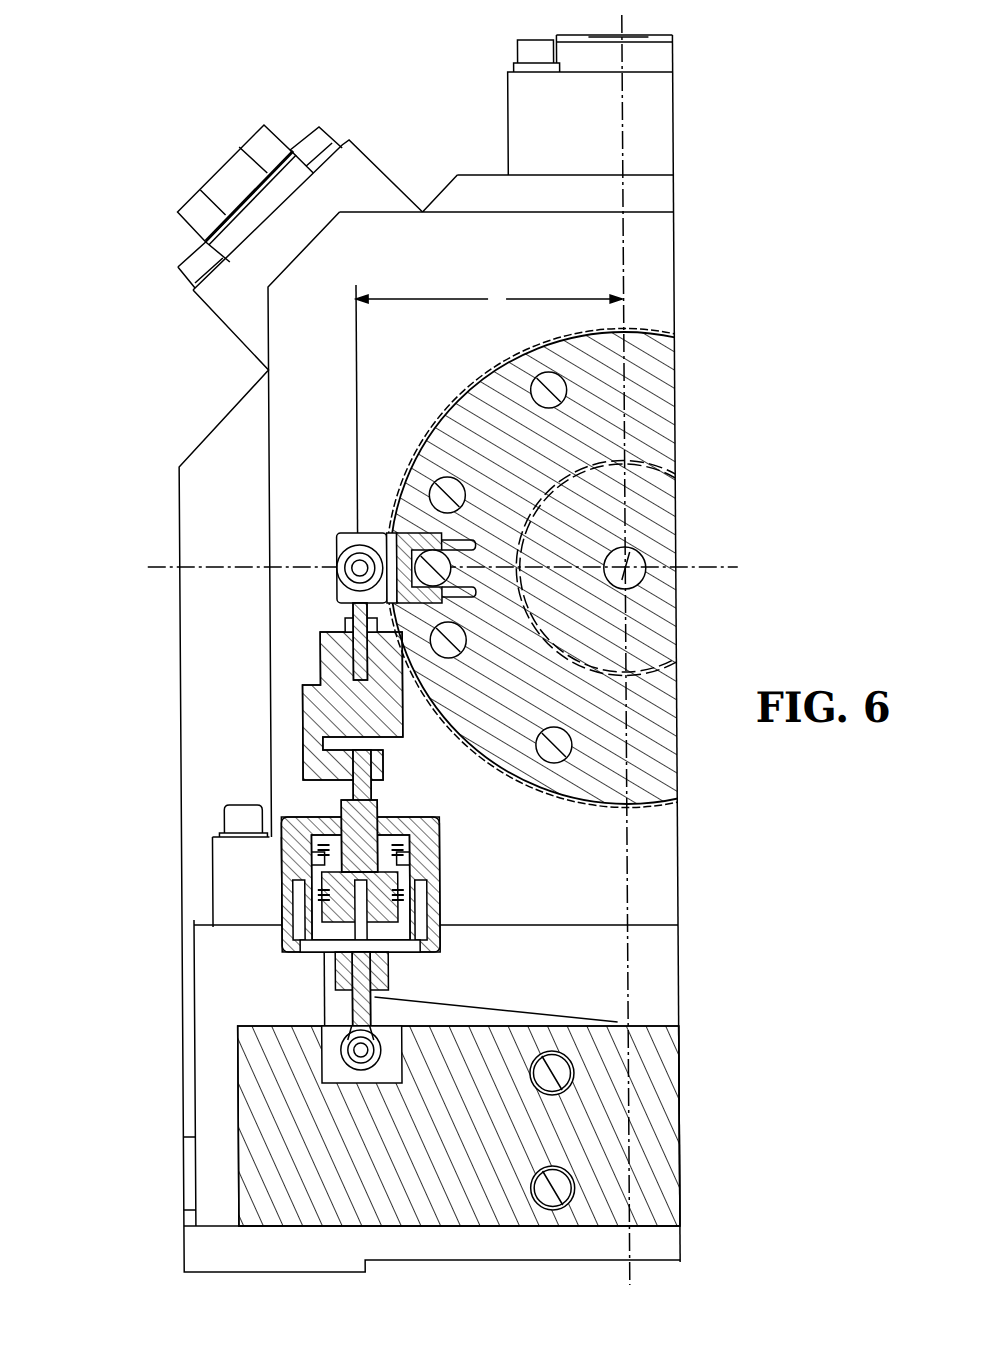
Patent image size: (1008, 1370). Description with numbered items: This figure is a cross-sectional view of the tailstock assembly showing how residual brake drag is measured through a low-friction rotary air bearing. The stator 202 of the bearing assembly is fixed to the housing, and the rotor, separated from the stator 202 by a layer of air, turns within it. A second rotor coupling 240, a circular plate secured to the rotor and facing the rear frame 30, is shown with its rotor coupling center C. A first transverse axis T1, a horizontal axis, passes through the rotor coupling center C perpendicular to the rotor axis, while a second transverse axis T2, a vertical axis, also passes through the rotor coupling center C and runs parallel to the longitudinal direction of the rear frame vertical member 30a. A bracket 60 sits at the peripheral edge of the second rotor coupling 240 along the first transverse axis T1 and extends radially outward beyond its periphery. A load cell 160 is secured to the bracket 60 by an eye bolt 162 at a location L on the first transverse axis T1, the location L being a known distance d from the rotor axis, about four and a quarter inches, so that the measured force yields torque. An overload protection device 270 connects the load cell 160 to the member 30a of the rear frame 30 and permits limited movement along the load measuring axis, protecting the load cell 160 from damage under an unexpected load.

The stator 202 is at (653, 230).
The second rotor coupling 240 is at (667, 415).
The bracket 60 is at (350, 533).
The load cell 160 is at (320, 683).
The eye bolt 162 is at (352, 612).
The overload protection device 270 is at (290, 860).
The rear frame 30 is at (536, 1126).
The rear frame vertical member 30a is at (675, 1143).
The first transverse axis T1 is at (735, 567).
The second transverse axis T2 is at (625, 20).
The rotor coupling center C is at (642, 547).
The location L is at (342, 548).
The distance d is at (490, 409).